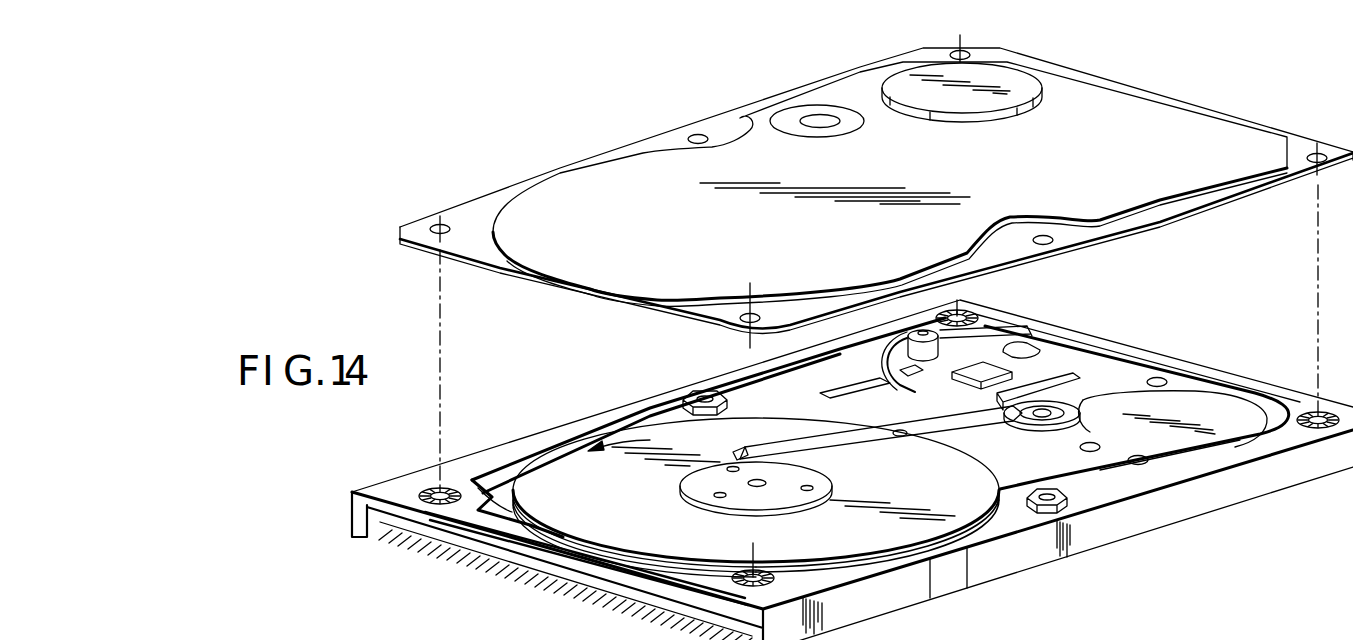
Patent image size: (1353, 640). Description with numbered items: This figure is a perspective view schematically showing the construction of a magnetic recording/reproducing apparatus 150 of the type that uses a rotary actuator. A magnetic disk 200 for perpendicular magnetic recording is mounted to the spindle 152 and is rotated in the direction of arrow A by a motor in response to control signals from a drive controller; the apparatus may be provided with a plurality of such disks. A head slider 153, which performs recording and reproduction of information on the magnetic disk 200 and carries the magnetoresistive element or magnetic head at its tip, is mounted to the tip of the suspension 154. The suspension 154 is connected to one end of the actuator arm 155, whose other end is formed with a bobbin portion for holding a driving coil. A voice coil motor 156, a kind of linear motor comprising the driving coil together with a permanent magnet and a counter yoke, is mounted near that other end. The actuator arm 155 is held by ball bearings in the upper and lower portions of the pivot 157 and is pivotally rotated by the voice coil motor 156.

The magnetic recording/reproducing apparatus 150 is at (662, 126).
The spindle 152 is at (778, 497).
The head slider 153 is at (740, 452).
The suspension 154 is at (853, 428).
The actuator arm 155 is at (923, 433).
The voice coil motor 156 is at (1230, 432).
The pivot 157 is at (1230, 393).
The magnetic disk 200 is at (540, 462).